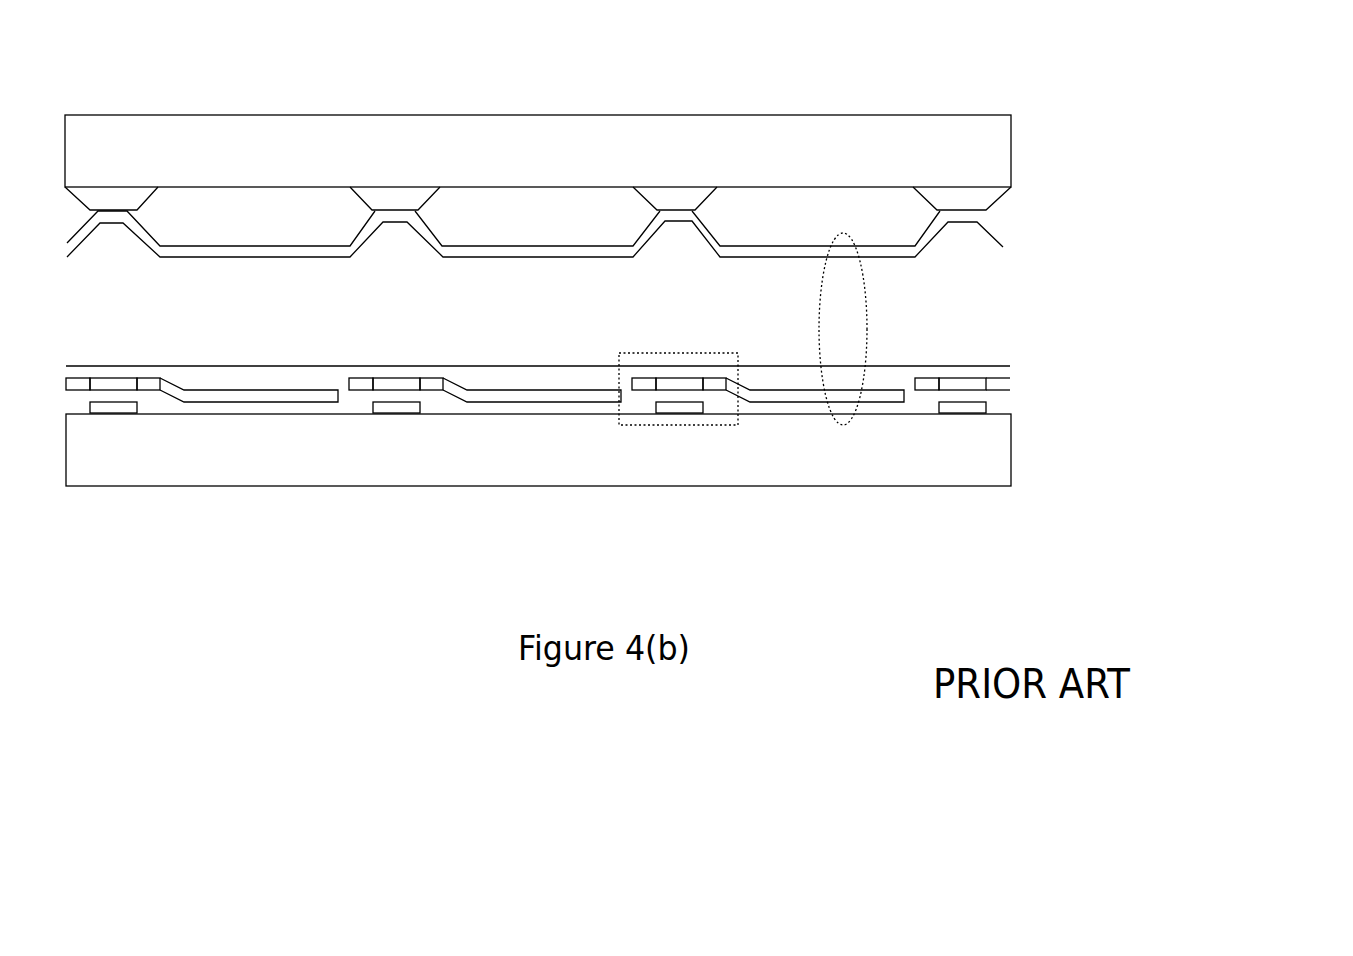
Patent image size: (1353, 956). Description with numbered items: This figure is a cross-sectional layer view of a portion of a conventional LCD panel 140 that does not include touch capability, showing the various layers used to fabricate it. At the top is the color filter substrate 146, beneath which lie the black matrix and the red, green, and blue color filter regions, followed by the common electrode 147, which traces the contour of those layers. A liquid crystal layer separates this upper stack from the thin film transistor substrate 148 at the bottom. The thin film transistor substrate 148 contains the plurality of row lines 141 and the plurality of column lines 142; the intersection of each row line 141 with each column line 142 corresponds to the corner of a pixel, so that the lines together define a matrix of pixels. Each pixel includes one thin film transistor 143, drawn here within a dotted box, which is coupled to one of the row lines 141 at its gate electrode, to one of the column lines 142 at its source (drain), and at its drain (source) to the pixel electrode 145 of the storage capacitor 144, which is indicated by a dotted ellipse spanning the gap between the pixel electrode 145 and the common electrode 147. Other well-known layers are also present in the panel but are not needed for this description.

The LCD panel 140 is at (632, 79).
The row line 141 is at (353, 412).
The column line 142 is at (352, 364).
The thin film transistor 143 is at (902, 465).
The storage capacitor 144 is at (807, 330).
The pixel electrode 145 is at (682, 465).
The color filter substrate 146 is at (1350, 162).
The common electrode 147 is at (1327, 272).
The thin film transistor substrate 148 is at (1265, 465).